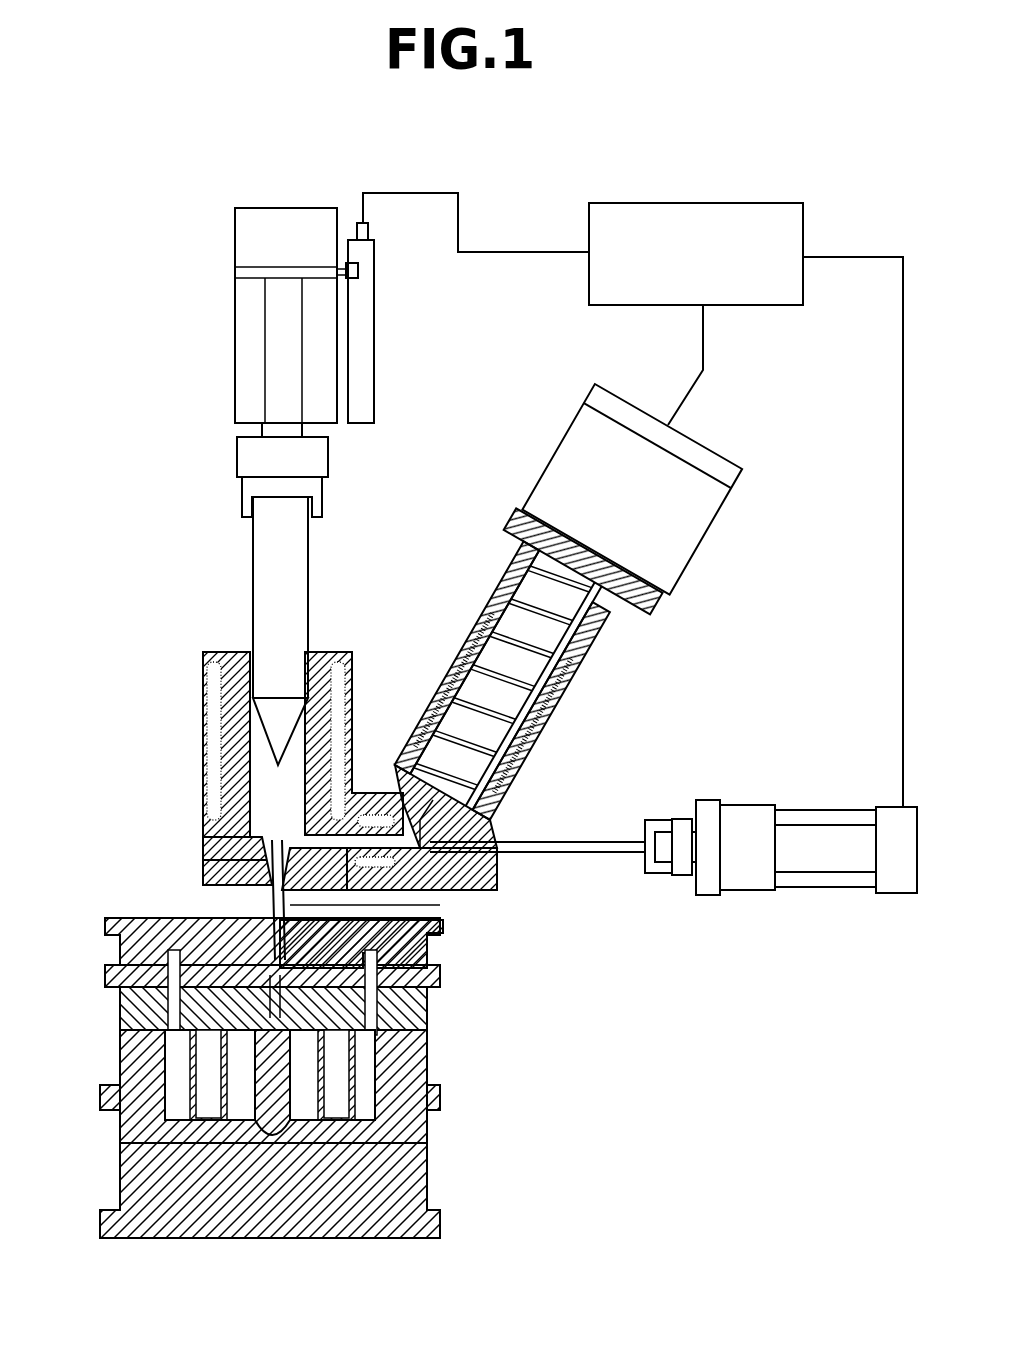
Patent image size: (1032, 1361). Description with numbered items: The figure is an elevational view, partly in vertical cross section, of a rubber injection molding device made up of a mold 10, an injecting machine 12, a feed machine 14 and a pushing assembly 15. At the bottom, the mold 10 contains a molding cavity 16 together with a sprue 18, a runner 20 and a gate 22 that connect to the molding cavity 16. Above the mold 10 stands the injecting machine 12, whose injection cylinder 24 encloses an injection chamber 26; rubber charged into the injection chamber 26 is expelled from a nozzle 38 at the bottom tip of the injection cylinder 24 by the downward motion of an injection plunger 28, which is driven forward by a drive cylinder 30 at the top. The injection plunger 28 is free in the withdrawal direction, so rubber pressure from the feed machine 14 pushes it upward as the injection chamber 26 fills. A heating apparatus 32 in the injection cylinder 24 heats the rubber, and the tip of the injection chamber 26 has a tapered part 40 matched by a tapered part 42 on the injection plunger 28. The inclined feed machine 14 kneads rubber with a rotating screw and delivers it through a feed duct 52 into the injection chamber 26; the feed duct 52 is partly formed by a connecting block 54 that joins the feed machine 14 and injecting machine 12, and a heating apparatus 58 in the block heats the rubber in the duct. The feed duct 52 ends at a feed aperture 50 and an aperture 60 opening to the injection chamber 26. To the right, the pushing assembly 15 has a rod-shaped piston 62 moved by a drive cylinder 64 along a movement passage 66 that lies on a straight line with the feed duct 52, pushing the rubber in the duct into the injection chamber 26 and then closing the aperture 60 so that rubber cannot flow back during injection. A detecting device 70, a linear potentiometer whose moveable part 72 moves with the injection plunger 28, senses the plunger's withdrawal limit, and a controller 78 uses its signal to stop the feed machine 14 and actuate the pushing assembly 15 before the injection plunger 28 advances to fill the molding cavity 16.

The mold 10 is at (356, 1065).
The injecting machine 12 is at (245, 728).
The feed machine 14 is at (595, 614).
The pushing assembly 15 is at (598, 920).
The molding cavity 16 is at (182, 1050).
The sprue 18 is at (188, 922).
The runner 20 is at (170, 968).
The gate 22 is at (130, 1000).
The injection cylinder 24 is at (249, 710).
The injection chamber 26 is at (245, 800).
The injection plunger 28 is at (292, 541).
The drive cylinder 30 is at (232, 311).
The heating apparatus 32 is at (204, 771).
The nozzle 38 is at (225, 876).
The tapered part 40 is at (240, 845).
The tapered part 42 is at (275, 738).
The feed aperture 50 is at (497, 866).
The feed duct 52 is at (335, 873).
The connecting block 54 is at (485, 892).
The heating apparatus 58 is at (382, 804).
The aperture 60 is at (354, 780).
The piston 62 is at (590, 853).
The drive cylinder 64 is at (845, 900).
The movement passage 66 is at (504, 840).
The detecting device 70 is at (382, 326).
The moveable part 72 is at (360, 272).
The controller 78 is at (766, 222).